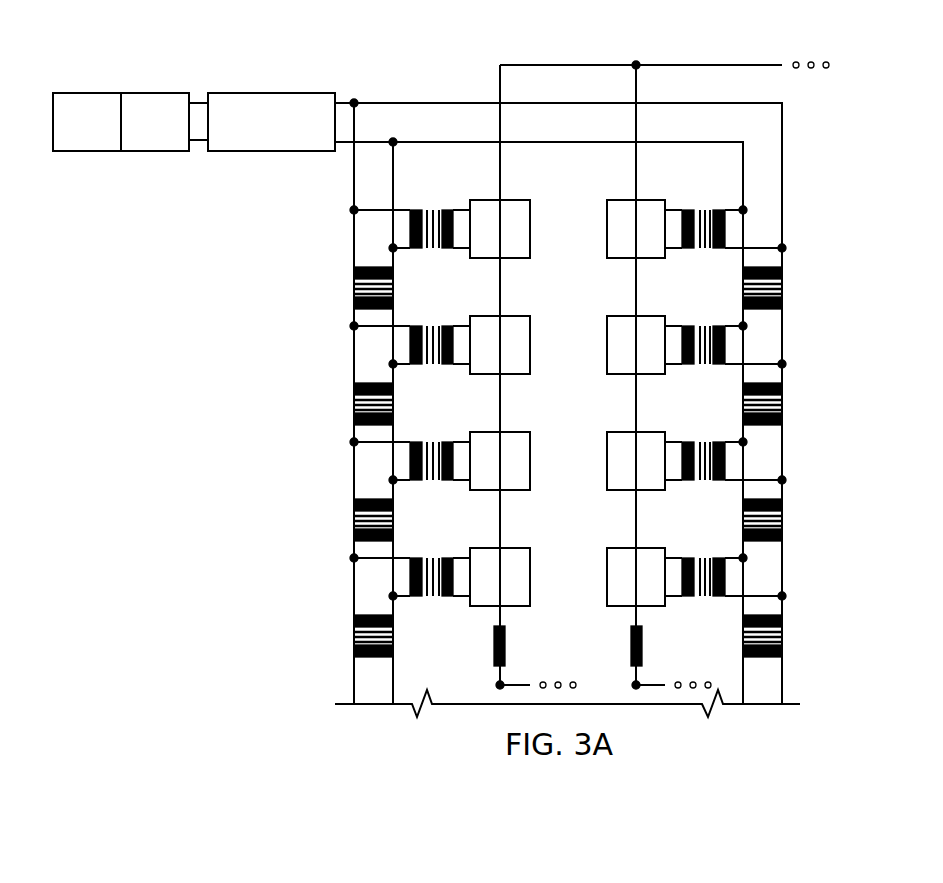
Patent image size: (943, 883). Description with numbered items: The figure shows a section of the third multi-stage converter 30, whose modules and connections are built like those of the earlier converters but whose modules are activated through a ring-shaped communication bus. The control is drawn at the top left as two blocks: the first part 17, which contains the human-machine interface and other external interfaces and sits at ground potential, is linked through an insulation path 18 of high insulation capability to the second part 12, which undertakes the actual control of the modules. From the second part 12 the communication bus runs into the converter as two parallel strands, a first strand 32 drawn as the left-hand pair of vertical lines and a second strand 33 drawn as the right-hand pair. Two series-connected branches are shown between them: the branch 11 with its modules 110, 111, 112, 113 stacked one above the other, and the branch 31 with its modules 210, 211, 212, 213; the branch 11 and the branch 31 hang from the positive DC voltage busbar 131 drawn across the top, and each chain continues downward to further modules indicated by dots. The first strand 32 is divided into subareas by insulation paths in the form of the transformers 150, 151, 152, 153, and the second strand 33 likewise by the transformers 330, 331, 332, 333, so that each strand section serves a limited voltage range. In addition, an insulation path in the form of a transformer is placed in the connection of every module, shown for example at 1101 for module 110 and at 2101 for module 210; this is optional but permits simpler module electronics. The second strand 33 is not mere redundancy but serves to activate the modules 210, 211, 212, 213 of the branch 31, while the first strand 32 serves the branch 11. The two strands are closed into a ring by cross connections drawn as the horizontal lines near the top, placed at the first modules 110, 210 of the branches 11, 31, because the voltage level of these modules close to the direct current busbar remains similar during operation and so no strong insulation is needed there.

The first part 17 is at (65, 100).
The second part 12 is at (134, 100).
The insulation path 18 is at (270, 93).
The third multi-stage converter 30 is at (788, 162).
The first strand 32 is at (404, 96).
The branch 11 is at (528, 57).
The positive DC voltage busbar 131 is at (568, 63).
The branch 31 is at (665, 57).
The second strand 33 is at (781, 57).
The first capacitor element 1101 is at (432, 202).
The second capacitor element 2101 is at (704, 202).
The module 110 is at (530, 218).
The module 111 is at (530, 333).
The module 112 is at (530, 470).
The module 113 is at (530, 586).
The module 210 is at (606, 241).
The module 211 is at (606, 357).
The module 212 is at (606, 455).
The module 213 is at (606, 571).
The transformer 150 is at (351, 287).
The transformer 151 is at (351, 404).
The transformer 152 is at (351, 519).
The transformer 153 is at (351, 637).
The transformer 330 is at (740, 287).
The transformer 331 is at (740, 404).
The transformer 332 is at (740, 519).
The transformer 333 is at (740, 637).